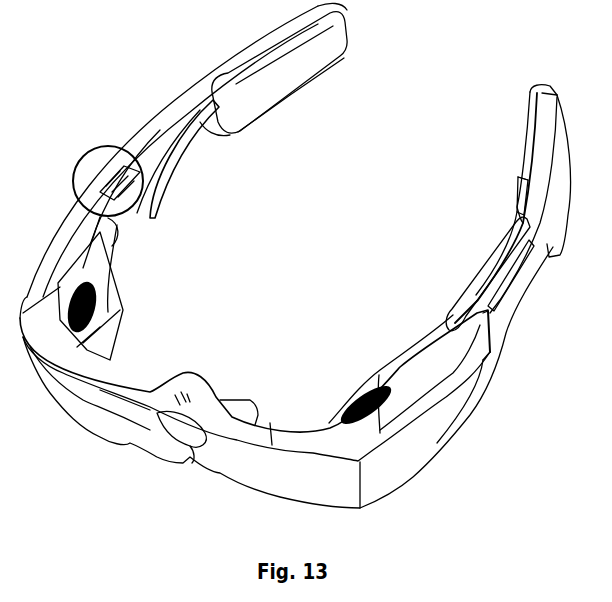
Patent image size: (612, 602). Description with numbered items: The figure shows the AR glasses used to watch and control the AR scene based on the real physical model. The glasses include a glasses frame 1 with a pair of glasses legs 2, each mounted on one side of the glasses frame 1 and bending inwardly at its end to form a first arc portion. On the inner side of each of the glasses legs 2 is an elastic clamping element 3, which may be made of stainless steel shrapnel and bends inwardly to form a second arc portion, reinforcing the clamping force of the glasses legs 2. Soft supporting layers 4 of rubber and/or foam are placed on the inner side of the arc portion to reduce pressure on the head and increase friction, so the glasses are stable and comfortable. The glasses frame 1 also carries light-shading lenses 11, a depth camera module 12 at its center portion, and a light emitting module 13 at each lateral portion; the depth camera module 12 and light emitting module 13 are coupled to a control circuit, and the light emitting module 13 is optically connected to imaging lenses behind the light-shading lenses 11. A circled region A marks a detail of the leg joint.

The glasses frame 1 is at (245, 430).
The glasses legs 2 is at (551, 130).
The elastic clamping element 3 is at (480, 285).
The soft supporting layers 4 is at (492, 247).
The lightshading lenses 11 is at (97, 410).
The depth camera module 12 is at (185, 430).
The light emitting module 13 is at (370, 380).
The detail region A is at (101, 145).